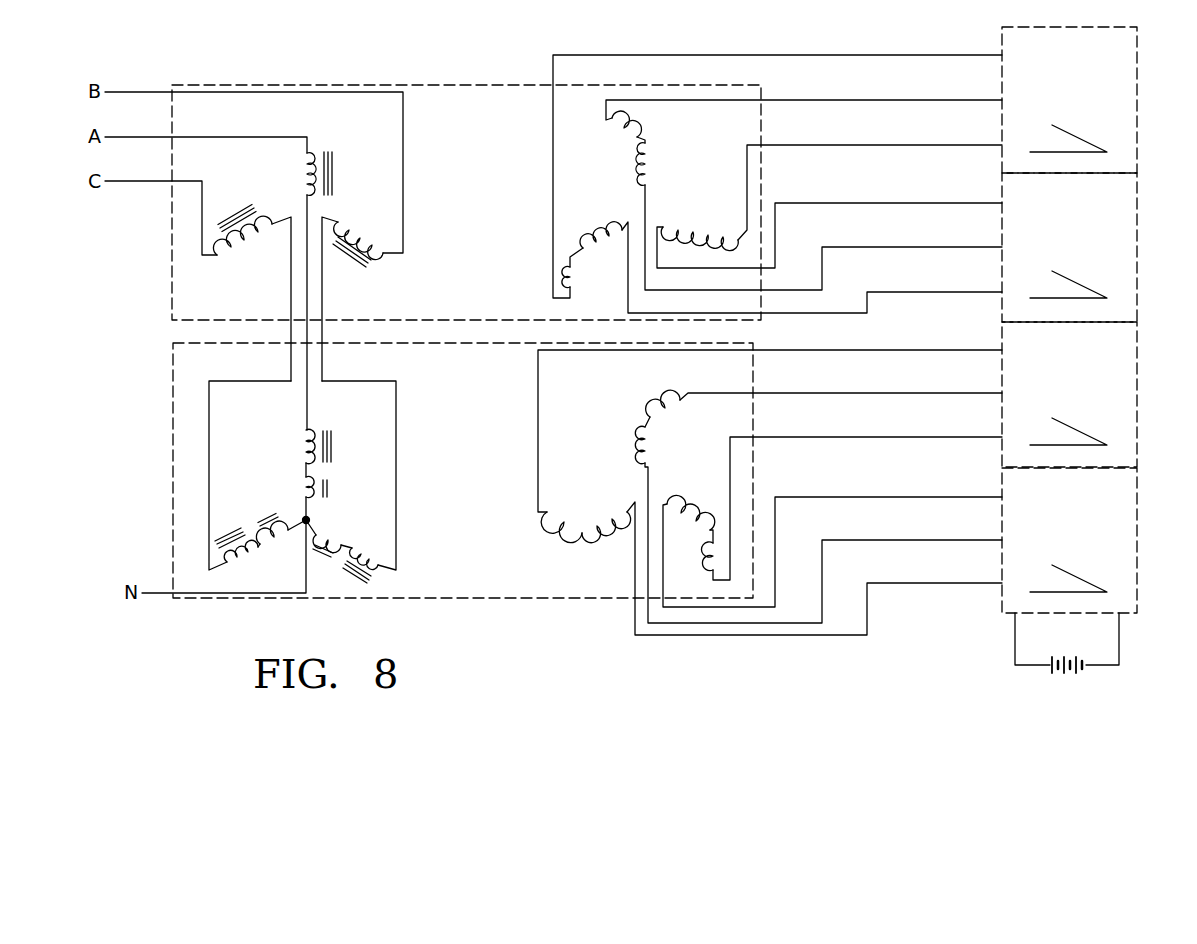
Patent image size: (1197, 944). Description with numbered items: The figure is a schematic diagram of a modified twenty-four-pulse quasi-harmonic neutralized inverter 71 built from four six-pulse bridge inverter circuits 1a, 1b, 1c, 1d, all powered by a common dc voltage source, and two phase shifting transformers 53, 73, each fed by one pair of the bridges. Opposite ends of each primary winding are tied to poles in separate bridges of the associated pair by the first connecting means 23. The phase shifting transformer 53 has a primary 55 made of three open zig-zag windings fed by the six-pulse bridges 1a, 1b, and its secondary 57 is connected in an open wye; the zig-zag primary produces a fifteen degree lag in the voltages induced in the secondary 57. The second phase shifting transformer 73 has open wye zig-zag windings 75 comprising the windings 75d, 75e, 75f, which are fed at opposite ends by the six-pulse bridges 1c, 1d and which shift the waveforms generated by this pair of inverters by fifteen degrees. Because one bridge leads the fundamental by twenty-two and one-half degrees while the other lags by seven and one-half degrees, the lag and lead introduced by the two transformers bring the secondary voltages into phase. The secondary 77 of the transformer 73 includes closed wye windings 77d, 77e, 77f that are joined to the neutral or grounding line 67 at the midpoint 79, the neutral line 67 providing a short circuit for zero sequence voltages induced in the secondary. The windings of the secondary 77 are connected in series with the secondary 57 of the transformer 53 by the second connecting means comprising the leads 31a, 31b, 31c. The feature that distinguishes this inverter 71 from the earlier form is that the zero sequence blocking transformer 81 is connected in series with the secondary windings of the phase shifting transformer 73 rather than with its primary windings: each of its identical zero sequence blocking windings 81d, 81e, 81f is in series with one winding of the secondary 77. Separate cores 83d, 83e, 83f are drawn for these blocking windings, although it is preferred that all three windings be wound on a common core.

The inverter 71 is at (495, 38).
The phase shifting transformer 53 is at (424, 84).
The phase shifting transformer 73 is at (484, 602).
The secondary 57 is at (358, 188).
The lead 31a is at (308, 272).
The lead 31b is at (291, 258).
The lead 31c is at (322, 304).
The primary 55 is at (688, 185).
The zig-zag windings 75 is at (747, 492).
The zig-zag winding 75d is at (639, 441).
The zig-zag winding 75e is at (686, 503).
The zig-zag winding 75f is at (610, 535).
The secondary 77 is at (307, 488).
The secondary winding 77d is at (306, 445).
The secondary winding 77e is at (381, 574).
The secondary winding 77f is at (247, 565).
The zero sequence blocking transformer 81 is at (352, 517).
The zero sequence blocking winding 81d is at (308, 492).
The zero sequence blocking winding 81e is at (340, 538).
The zero sequence blocking winding 81f is at (277, 548).
The core 83d is at (331, 490).
The core 83e is at (324, 561).
The core 83f is at (270, 512).
The midpoint 79 is at (309, 519).
The neutral line 67 is at (190, 592).
The first connecting means 23 is at (1045, 343).
The six-pulse bridge inverter circuit 1a is at (1137, 98).
The six-pulse bridge inverter circuit 1b is at (1137, 237).
The six-pulse bridge inverter circuit 1c is at (1137, 382).
The six-pulse bridge inverter circuit 1d is at (1137, 520).